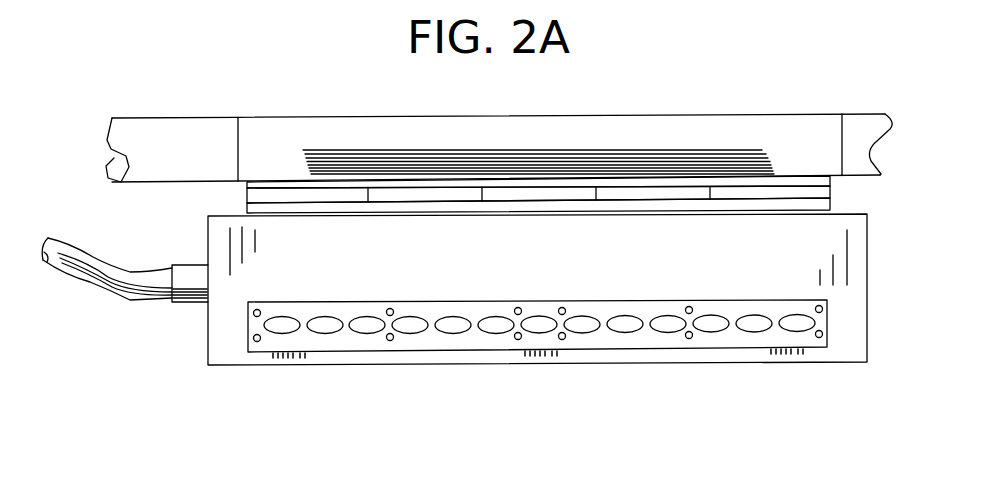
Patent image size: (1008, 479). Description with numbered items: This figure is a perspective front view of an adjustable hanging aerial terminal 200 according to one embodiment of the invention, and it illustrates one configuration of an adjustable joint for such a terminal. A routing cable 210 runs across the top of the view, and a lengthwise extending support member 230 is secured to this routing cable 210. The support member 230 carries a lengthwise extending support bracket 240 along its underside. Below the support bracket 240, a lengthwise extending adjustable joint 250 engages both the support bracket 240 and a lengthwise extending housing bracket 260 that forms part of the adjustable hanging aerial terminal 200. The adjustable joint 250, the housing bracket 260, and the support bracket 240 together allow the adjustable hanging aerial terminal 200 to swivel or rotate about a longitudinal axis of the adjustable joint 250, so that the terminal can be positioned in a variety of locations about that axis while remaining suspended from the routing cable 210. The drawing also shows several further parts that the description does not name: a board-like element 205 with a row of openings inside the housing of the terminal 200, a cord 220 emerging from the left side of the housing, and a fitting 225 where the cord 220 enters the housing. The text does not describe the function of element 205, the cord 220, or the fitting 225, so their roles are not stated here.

The adjustable hanging aerial terminal 200 is at (217, 387).
The light source board 205 is at (650, 350).
The routing cable 210 is at (160, 117).
The power cord 220 is at (72, 277).
The strain relief connector 225 is at (187, 307).
The support member 230 is at (308, 113).
The support bracket 240 is at (832, 182).
The adjustable joint 250 is at (832, 193).
The housing bracket 260 is at (832, 205).